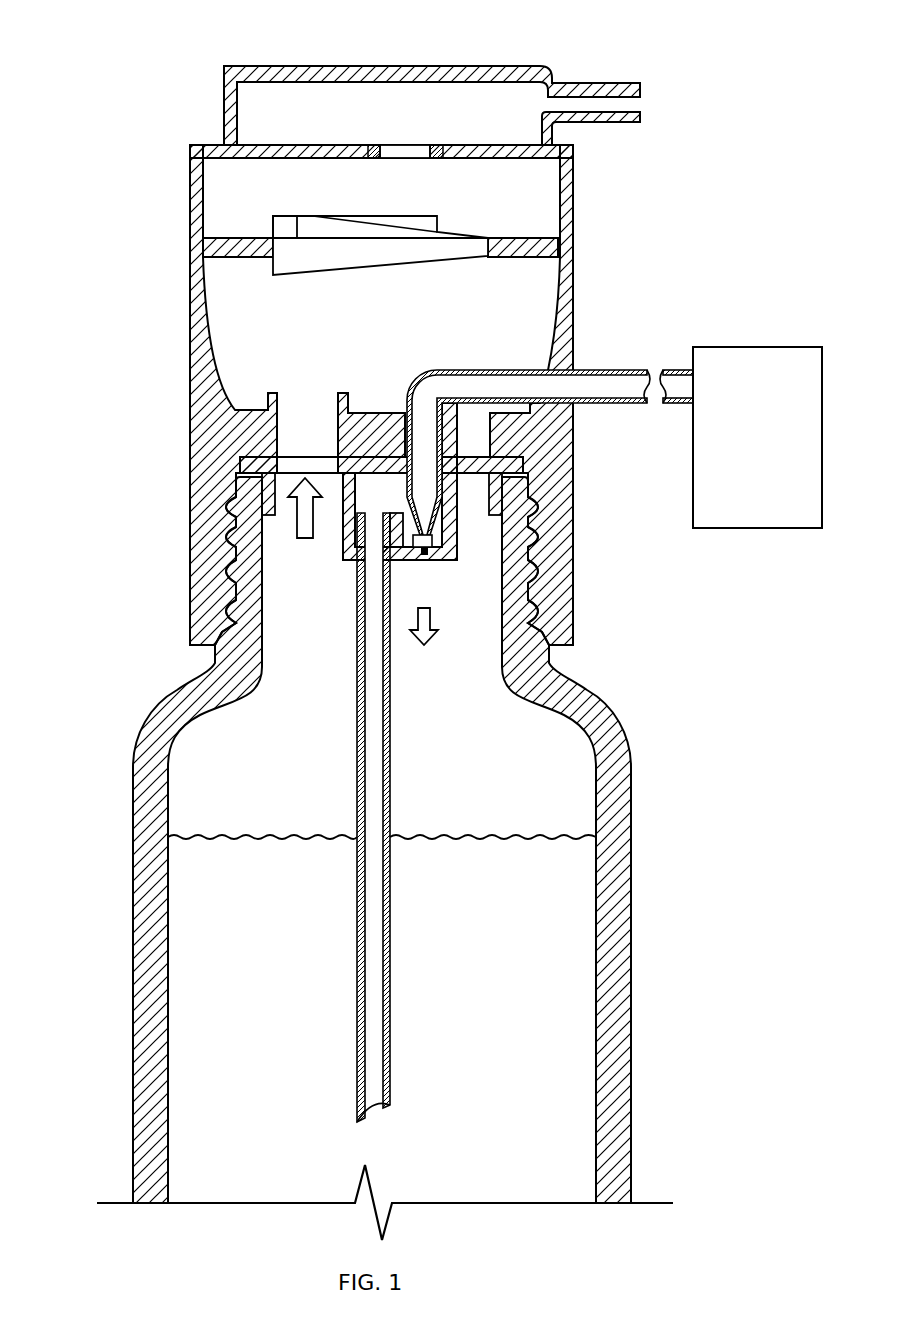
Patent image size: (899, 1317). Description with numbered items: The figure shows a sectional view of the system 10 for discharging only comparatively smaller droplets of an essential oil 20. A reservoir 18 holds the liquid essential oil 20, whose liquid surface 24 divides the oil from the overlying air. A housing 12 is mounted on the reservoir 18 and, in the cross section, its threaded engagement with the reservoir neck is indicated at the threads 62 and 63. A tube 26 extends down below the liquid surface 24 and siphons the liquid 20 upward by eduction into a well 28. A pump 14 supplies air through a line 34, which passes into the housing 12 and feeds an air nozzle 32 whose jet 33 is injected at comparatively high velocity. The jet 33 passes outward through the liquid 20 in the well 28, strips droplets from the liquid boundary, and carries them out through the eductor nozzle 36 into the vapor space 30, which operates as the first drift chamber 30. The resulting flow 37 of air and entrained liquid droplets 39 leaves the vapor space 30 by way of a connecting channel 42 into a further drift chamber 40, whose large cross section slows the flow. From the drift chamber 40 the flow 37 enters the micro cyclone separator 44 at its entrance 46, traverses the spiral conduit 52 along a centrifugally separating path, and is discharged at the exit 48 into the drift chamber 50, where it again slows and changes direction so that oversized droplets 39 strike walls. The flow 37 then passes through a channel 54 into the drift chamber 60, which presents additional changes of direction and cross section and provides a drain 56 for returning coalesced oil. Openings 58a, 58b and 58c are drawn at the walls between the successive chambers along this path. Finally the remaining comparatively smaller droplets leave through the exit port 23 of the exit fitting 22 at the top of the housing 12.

The system 10 is at (90, 157).
The housing 12 is at (188, 521).
The pump 14 is at (768, 407).
The reservoir 18 is at (137, 727).
The essential oil 20 is at (278, 899).
The exit fitting 22 is at (262, 75).
The exit port 23 is at (640, 104).
The liquid surface 24 is at (315, 835).
The tube 26 is at (392, 740).
The well 28 is at (437, 535).
The vapor space 30 is at (534, 772).
The air nozzle 32 is at (418, 540).
The jet 33 is at (430, 620).
The line 34 is at (590, 368).
The eductor nozzle 36 is at (426, 551).
The flow 37 is at (305, 540).
The liquid droplets 39 is at (293, 742).
The drift chamber 40 is at (426, 334).
The connecting channel 42 is at (300, 432).
The micro cyclone separator 44 is at (268, 232).
The entrance 46 is at (283, 276).
The exit 48 is at (287, 216).
The drift chamber 50 is at (248, 202).
The conduit 52 is at (365, 222).
The channel 54 is at (406, 146).
The drain 56 is at (265, 150).
The lower passage 58a is at (343, 396).
The middle passage 58b is at (440, 222).
The upper passage 58c is at (368, 146).
The drift chamber 60 is at (394, 114).
The thread 62 is at (226, 572).
The thread 63 is at (222, 547).